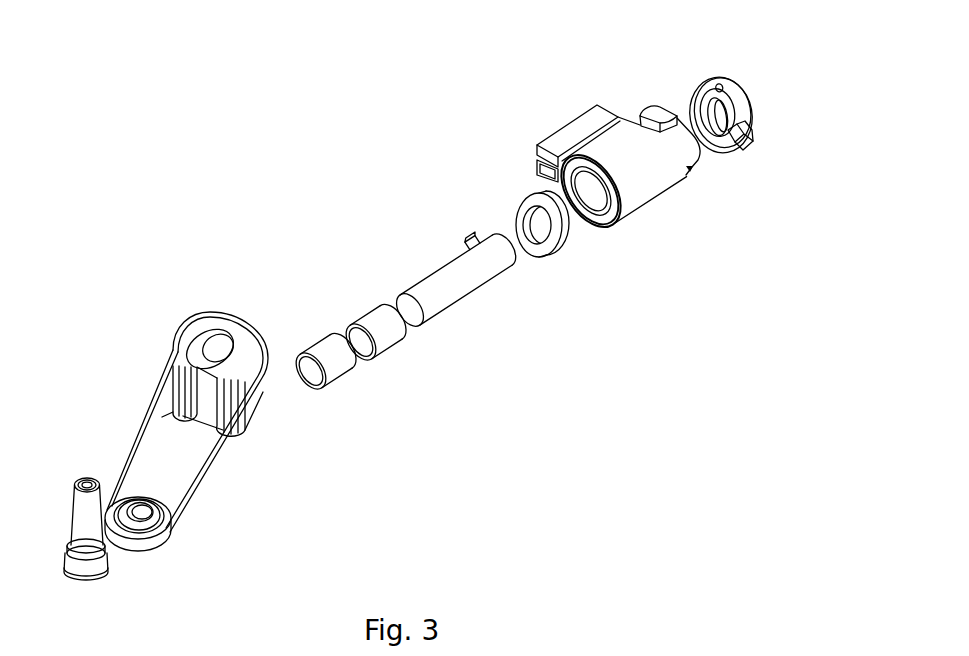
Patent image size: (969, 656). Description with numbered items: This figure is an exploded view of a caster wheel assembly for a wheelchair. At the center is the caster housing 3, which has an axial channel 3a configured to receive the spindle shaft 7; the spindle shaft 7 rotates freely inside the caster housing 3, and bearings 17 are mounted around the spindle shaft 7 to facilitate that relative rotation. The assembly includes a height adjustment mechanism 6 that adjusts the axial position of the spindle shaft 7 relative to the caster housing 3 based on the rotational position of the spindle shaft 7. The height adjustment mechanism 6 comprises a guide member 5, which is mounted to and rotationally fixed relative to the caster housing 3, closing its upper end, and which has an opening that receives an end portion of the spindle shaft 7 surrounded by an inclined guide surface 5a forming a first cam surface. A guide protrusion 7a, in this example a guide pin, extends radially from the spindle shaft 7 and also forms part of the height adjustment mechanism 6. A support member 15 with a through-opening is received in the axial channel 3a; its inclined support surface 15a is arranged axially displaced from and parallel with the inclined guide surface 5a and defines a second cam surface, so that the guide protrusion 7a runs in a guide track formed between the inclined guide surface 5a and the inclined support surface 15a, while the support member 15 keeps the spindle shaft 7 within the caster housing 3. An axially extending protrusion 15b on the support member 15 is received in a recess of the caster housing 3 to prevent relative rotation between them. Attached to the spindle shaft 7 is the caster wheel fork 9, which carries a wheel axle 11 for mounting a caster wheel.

The caster housing 3 is at (620, 128).
The axial channel 3a is at (588, 202).
The guide member 5 is at (735, 97).
The inclined guide surface 5a is at (699, 97).
The height adjustment mechanism 6 is at (449, 98).
The spindle shaft 7 is at (448, 302).
The guide protrusion 7a is at (467, 241).
The caster wheel fork 9 is at (203, 483).
The wheel axle 11 is at (72, 497).
The support member 15 is at (553, 242).
The inclined support surface 15a is at (551, 191).
The axially extending protrusion 15b is at (556, 243).
The bearings 17 is at (382, 350).